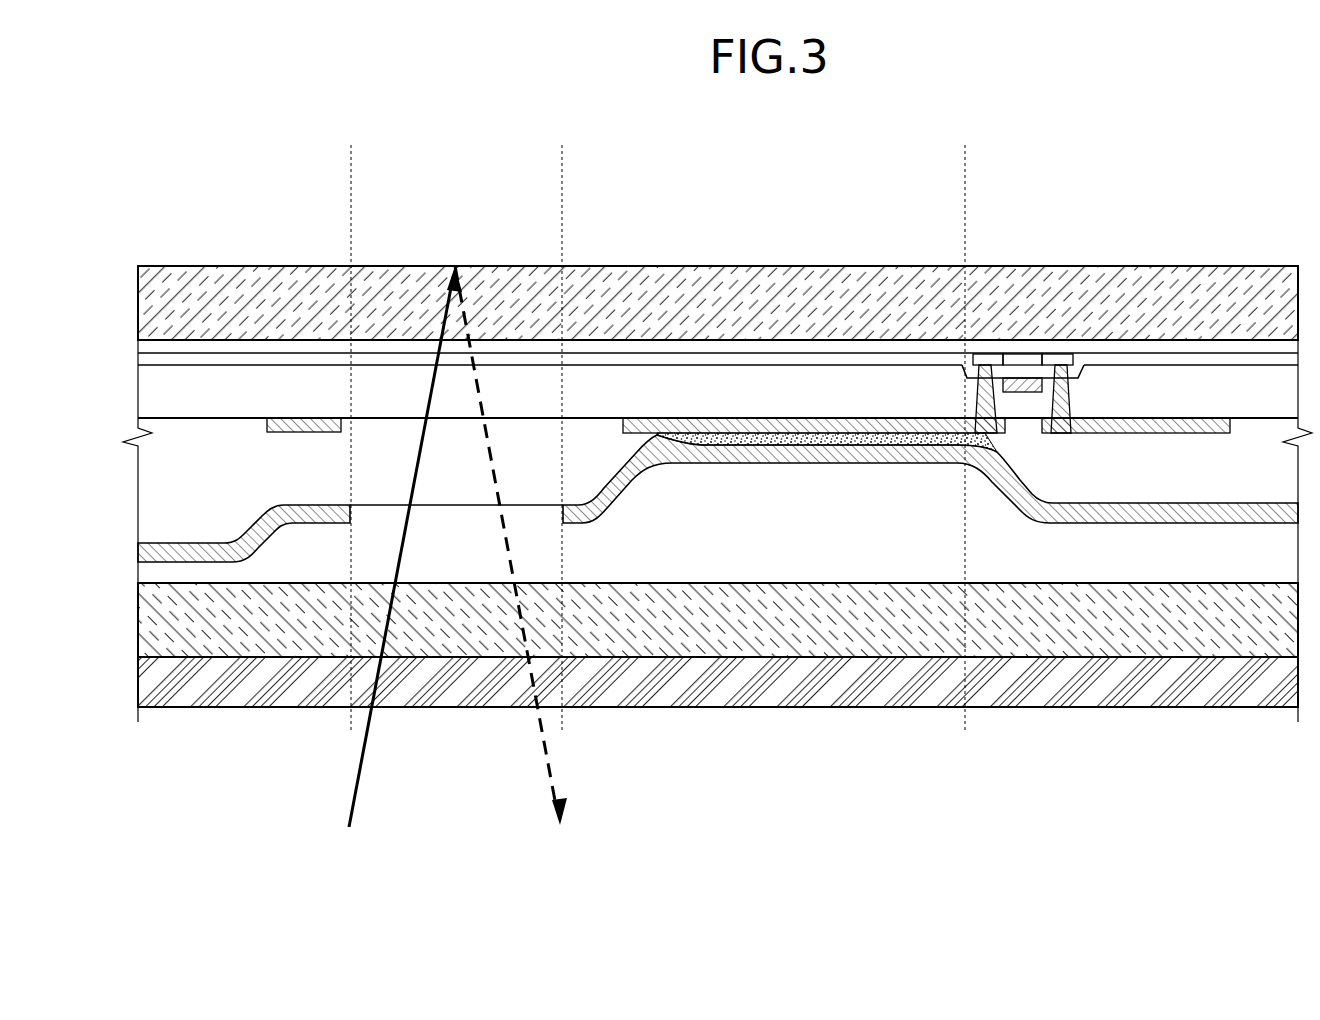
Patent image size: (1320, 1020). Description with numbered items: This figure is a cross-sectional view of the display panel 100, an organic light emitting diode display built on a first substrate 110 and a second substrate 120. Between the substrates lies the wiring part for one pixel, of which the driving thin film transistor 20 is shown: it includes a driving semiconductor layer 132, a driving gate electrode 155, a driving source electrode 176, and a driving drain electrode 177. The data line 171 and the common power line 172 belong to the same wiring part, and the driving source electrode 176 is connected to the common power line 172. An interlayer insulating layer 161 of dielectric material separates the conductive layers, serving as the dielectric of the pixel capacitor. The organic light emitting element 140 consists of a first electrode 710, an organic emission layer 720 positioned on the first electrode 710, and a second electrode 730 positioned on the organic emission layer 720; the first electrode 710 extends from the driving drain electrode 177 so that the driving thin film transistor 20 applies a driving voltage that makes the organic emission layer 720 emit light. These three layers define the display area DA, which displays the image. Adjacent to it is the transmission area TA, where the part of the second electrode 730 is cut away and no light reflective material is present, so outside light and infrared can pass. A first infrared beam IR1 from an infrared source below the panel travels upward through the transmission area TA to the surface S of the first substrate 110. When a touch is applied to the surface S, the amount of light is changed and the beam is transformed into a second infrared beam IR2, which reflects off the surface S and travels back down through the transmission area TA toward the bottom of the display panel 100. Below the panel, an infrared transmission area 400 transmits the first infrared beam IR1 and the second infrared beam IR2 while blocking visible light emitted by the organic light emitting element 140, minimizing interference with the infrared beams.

The display panel 100 is at (1160, 201).
The first substrate 110 is at (623, 267).
The second substrate 120 is at (1177, 638).
The driving semiconductor layer 132 is at (1030, 360).
The organic light emitting element 140 is at (715, 760).
The driving gate electrode 155 is at (1017, 388).
The interlayer insulating layer 161 is at (768, 383).
The data line 171 is at (312, 418).
The common power line 172 is at (1207, 428).
The driving source electrode 176 is at (1100, 418).
The driving drain electrode 177 is at (977, 422).
The driving thin film transistor 20 is at (1122, 202).
The infrared transmission area 400 is at (1093, 683).
The first electrode 710 is at (727, 433).
The organic emission layer 720 is at (773, 445).
The second electrode 730 is at (820, 454).
The surface S is at (236, 266).
The transmission area TA is at (562, 164).
The display area DA is at (562, 164).
The first infrared beam IR1 is at (357, 786).
The second infrared beam IR2 is at (557, 778).